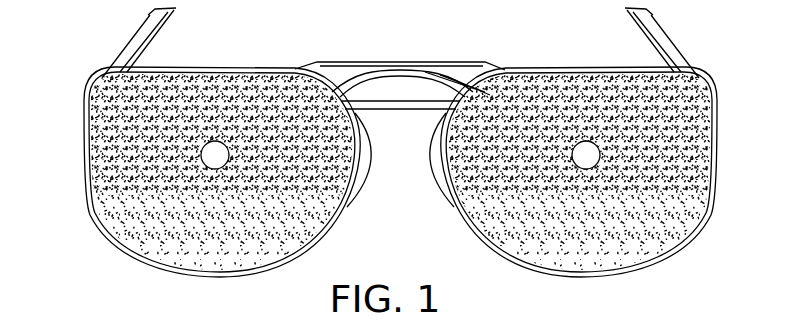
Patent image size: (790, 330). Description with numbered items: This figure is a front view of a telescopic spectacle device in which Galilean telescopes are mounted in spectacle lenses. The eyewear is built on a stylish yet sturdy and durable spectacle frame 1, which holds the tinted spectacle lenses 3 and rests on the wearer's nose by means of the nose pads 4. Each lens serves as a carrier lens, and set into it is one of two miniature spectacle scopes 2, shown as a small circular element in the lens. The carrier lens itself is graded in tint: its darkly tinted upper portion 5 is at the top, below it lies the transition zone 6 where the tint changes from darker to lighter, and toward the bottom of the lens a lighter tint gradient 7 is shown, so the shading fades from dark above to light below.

The spectacle frame 1 is at (447, 62).
The miniature spectacle scope 2 is at (216, 152).
The tinted spectacle lenses 3 is at (345, 205).
The nose pads 4 is at (430, 155).
The darkly tinted upper portion of the carrier lens 5 is at (90, 136).
The transition zone 6 is at (94, 196).
The lighter tint gradient 7 is at (651, 240).